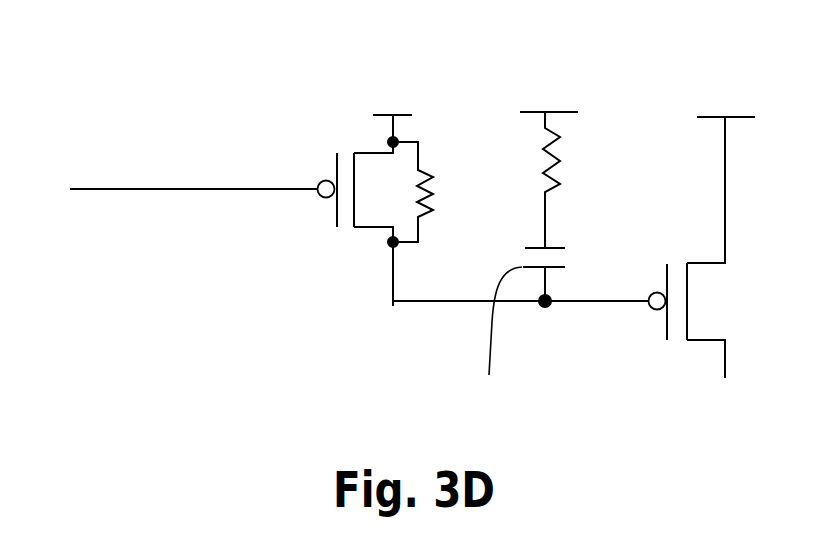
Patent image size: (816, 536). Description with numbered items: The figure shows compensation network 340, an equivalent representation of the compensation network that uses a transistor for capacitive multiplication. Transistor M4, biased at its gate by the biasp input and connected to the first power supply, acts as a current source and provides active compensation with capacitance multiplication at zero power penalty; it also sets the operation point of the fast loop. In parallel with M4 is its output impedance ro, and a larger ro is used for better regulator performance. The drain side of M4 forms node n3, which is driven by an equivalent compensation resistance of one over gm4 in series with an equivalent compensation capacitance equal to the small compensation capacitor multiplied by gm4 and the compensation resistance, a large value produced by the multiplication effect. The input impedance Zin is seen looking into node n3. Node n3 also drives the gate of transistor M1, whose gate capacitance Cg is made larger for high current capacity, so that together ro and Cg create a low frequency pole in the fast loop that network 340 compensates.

The compensation network 340 is at (86, 35).
The element biasp is at (189, 173).
The element M4 is at (365, 181).
The output impedance of M4 ro is at (424, 192).
The node n3 is at (520, 274).
The input impedance Zin is at (395, 336).
The gate capacitance of M1 Cg is at (584, 257).
The element M1 is at (702, 247).